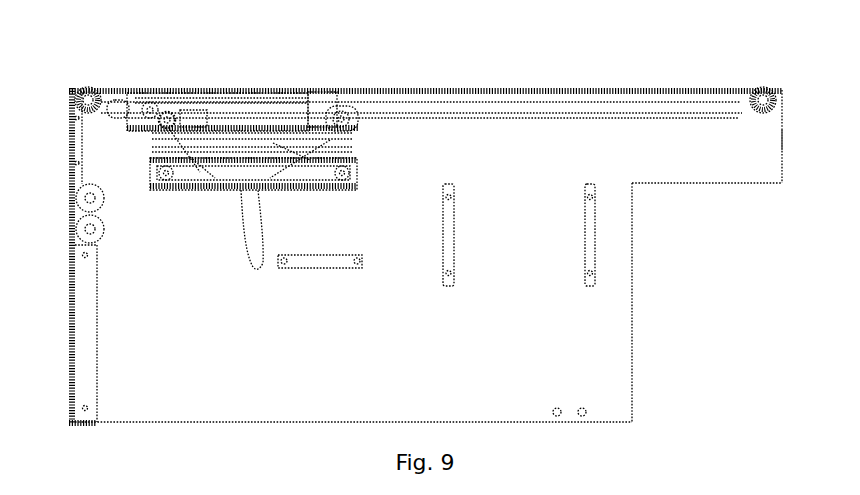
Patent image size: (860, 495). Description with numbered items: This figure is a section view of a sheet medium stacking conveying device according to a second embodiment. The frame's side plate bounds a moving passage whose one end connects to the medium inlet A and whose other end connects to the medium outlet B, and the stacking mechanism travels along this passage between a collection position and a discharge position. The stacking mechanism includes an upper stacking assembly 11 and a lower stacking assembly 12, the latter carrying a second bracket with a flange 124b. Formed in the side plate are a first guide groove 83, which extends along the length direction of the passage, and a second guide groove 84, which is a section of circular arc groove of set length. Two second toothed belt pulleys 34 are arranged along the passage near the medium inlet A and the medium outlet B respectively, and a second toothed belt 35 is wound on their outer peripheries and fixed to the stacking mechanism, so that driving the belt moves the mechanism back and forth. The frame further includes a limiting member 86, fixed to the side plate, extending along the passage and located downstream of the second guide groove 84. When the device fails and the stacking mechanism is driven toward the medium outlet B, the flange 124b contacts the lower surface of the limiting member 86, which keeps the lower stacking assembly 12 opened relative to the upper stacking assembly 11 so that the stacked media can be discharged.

The upper stacking assembly 11 is at (298, 117).
The lower stacking assembly 12 is at (160, 110).
The flange 124b is at (272, 147).
The second toothed belt pulley 34 is at (88, 88).
The second toothed belt 35 is at (493, 108).
The first guide groove 83 is at (532, 98).
The second guide groove 84 is at (260, 262).
The limiting member 86 is at (362, 252).
The medium inlet A is at (72, 212).
The medium outlet B is at (783, 138).